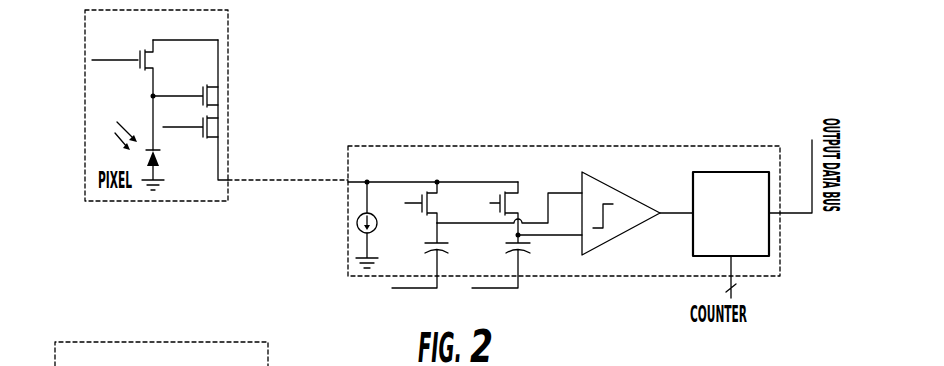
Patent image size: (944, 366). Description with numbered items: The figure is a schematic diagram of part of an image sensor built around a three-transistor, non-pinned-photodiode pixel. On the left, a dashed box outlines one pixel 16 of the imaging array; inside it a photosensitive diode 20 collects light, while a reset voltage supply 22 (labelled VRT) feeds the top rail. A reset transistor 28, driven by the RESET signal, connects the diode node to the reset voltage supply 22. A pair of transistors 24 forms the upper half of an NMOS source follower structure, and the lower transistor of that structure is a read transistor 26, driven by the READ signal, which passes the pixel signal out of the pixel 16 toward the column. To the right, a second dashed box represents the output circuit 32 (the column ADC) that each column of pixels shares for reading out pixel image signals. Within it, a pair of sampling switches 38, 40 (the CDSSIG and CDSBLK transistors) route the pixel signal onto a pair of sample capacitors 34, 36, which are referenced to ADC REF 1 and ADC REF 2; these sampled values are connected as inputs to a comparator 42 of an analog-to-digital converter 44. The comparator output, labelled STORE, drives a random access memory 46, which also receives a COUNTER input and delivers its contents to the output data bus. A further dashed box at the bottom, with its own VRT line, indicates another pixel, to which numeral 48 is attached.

The pixel 16 is at (85, 105).
The photosensitive diode 20 is at (158, 158).
The reset voltage supply 22 is at (195, 40).
The pair of transistors 24 is at (217, 106).
The read transistor 26 is at (215, 128).
The reset transistor 28 is at (145, 51).
The output circuit 32 is at (512, 143).
The sample capacitor 34 is at (423, 253).
The sample capacitor 36 is at (520, 260).
The sampling switch 38 is at (430, 191).
The sampling switch 40 is at (518, 185).
The comparator 42 is at (613, 187).
The analog-to-digital converter 44 is at (638, 202).
The random access memory 46 is at (750, 248).
The second pixel voltage supply VRT 48 is at (272, 365).